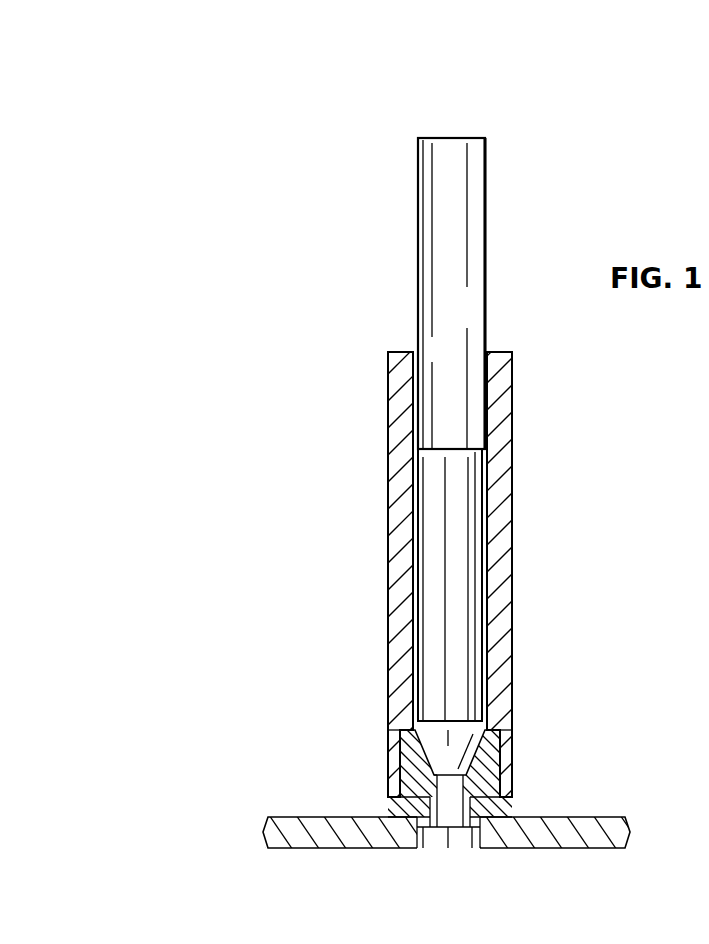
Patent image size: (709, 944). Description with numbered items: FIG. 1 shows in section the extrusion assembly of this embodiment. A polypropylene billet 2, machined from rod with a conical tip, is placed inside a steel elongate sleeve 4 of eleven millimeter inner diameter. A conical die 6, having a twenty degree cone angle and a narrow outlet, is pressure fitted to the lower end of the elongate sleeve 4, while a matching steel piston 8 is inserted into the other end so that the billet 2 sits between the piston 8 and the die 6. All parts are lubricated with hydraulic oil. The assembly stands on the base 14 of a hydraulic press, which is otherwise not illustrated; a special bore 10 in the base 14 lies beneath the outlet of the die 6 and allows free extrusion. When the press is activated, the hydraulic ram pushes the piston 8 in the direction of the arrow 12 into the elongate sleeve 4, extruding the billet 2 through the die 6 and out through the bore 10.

The billet 2 is at (475, 565).
The elongate sleeve 4 is at (512, 398).
The conical die 6 is at (510, 812).
The piston 8 is at (477, 250).
The special bore 10 is at (463, 848).
The arrow 12 is at (452, 112).
The base 14 is at (337, 843).